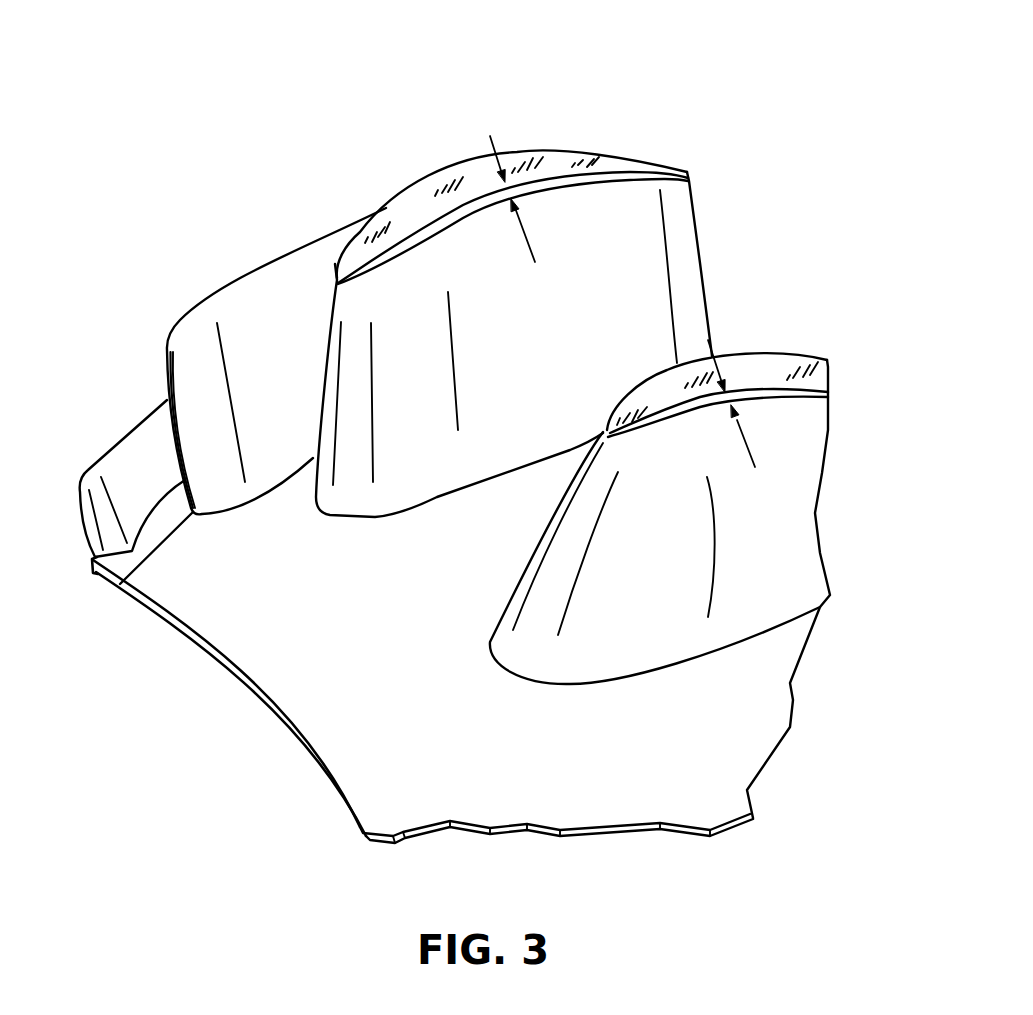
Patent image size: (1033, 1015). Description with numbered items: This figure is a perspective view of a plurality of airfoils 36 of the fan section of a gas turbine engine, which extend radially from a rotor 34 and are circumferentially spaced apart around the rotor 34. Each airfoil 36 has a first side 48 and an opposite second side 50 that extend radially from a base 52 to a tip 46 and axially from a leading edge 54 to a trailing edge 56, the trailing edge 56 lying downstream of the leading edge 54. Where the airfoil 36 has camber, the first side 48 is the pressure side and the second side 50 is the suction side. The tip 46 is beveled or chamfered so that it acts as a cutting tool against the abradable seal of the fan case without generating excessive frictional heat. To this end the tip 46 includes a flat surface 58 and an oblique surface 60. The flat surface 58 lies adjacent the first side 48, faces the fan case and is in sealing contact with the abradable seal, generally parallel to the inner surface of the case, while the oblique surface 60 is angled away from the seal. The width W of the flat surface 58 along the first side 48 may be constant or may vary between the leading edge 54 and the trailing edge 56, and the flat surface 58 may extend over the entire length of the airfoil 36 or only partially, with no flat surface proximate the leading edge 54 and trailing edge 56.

The rotor 34 is at (280, 635).
The airfoil 36 is at (302, 280).
The tip 46 is at (413, 206).
The first side 48 is at (508, 338).
The second side 50 is at (443, 168).
The base 52 is at (268, 492).
The leading edge 54 is at (353, 407).
The trailing edge 56 is at (703, 250).
The flat surface 58 is at (592, 168).
The oblique surface 60 is at (542, 163).